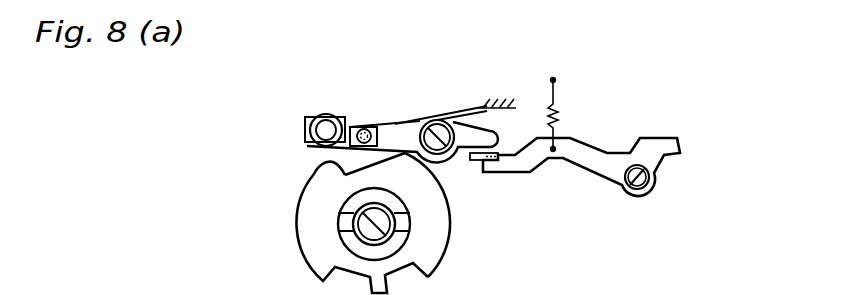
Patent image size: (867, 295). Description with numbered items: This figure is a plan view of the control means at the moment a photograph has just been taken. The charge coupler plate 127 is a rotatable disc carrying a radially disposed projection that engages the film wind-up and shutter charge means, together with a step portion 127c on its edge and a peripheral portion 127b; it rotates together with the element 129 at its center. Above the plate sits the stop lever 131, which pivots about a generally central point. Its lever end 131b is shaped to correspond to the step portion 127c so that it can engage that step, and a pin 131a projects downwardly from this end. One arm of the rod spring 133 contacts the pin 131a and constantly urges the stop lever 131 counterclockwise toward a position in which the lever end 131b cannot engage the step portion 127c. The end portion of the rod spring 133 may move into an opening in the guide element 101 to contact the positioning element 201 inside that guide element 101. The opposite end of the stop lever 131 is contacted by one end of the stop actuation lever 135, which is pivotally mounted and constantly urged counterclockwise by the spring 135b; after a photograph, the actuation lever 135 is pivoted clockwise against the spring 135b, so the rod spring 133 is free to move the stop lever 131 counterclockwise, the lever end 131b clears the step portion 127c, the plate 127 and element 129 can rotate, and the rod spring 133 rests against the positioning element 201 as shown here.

The guide element 101 is at (327, 117).
The positioning element 201 is at (311, 133).
The stop lever 131 is at (409, 127).
The pin 131a is at (364, 128).
The lever end 131b is at (391, 109).
The rod spring 133 is at (463, 112).
The stop actuation lever 135 is at (602, 163).
The spring 135b is at (557, 91).
The charge coupler plate 127 is at (316, 232).
The peripheral portion 127b is at (450, 238).
The step portion 127c is at (325, 166).
The element 129 is at (395, 202).